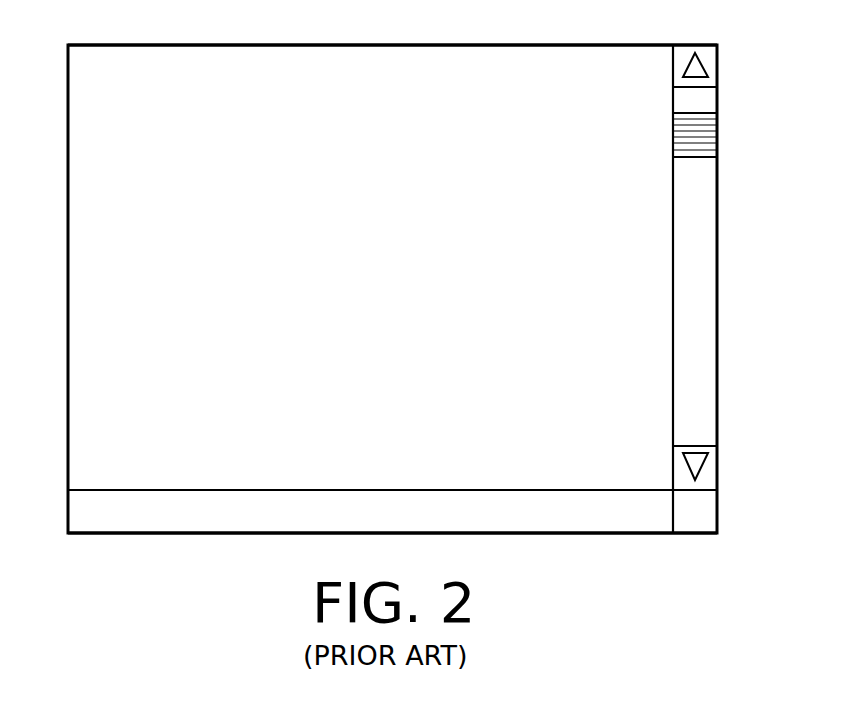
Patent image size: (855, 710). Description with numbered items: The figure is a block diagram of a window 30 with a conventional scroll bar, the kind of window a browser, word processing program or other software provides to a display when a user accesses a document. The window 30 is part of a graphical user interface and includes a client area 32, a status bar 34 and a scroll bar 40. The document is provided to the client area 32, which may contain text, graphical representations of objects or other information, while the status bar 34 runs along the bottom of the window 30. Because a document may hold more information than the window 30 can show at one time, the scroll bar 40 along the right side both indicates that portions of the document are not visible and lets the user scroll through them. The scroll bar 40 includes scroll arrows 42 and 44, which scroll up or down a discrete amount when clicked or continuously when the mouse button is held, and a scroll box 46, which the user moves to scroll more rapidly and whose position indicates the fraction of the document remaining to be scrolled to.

The window 30 is at (582, 602).
The client area 32 is at (197, 43).
The status bar 34 is at (68, 515).
The scroll bar 40 is at (754, 41).
The scroll arrow 42 is at (682, 77).
The scroll arrow 44 is at (703, 465).
The scroll box 46 is at (708, 132).